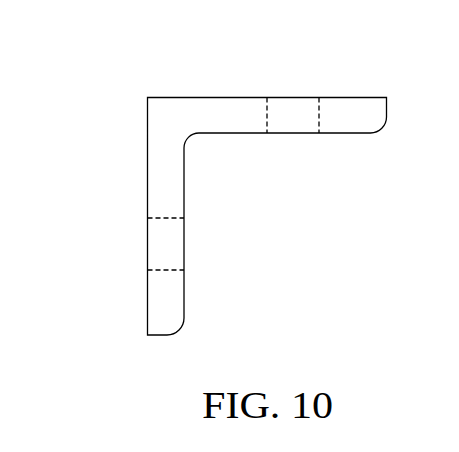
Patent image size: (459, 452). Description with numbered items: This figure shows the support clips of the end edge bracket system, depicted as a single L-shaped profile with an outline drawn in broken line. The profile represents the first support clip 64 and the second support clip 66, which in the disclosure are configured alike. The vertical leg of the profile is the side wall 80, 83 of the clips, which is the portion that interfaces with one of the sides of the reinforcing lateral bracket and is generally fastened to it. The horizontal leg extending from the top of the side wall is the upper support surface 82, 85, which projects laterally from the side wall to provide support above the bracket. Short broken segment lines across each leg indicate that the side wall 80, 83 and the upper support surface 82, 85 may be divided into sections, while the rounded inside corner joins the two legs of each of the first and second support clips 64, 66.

The first support clip 64 is at (210, 177).
The second support clip 66 is at (210, 177).
The side wall 80 is at (108, 262).
The side wall 83 is at (128, 294).
The upper support surface 82 is at (286, 76).
The upper support surface 85 is at (290, 75).